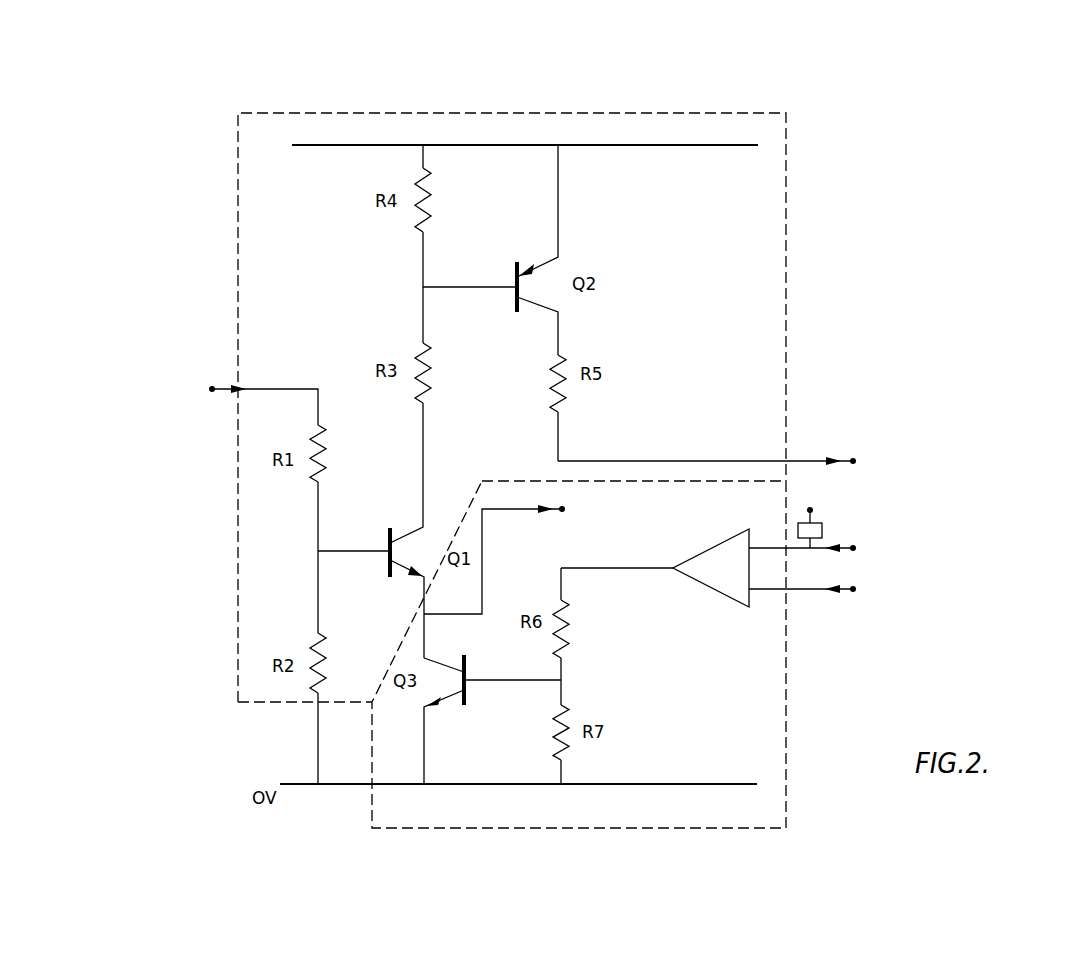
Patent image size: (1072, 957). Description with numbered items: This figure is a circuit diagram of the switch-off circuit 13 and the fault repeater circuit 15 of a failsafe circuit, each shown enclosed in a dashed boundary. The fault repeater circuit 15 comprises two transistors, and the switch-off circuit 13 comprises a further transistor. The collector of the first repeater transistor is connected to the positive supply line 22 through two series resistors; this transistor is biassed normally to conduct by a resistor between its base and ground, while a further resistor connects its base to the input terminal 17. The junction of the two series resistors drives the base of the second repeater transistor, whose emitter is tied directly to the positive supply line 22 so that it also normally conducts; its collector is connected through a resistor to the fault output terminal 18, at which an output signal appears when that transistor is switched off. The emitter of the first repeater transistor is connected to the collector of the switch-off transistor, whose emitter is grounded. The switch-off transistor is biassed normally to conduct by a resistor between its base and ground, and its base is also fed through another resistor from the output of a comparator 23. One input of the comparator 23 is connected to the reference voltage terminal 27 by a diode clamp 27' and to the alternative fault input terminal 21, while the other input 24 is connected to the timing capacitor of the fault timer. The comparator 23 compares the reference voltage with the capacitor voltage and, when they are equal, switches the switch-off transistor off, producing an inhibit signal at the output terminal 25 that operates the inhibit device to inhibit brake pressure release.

The switch-off circuit 13 is at (740, 828).
The fault repeater circuit 15 is at (787, 285).
The input terminal 17 is at (200, 404).
The fault output terminal 18 is at (774, 472).
The alternative fault input terminal 21 is at (816, 556).
The positive supply line 22 is at (480, 145).
The comparator 23 is at (718, 583).
The other input of the comparator 24 is at (891, 603).
The output terminal 25 is at (555, 556).
The reference voltage terminal 27 is at (837, 504).
The diode clamp 27' is at (823, 530).